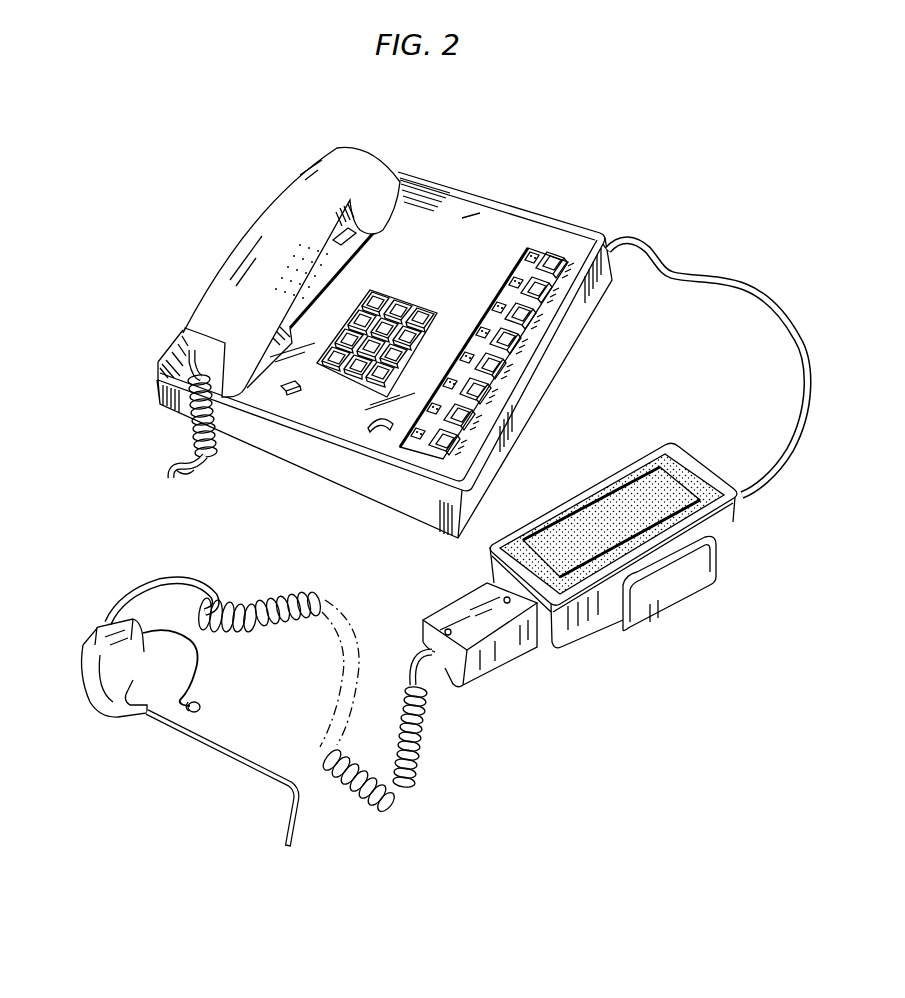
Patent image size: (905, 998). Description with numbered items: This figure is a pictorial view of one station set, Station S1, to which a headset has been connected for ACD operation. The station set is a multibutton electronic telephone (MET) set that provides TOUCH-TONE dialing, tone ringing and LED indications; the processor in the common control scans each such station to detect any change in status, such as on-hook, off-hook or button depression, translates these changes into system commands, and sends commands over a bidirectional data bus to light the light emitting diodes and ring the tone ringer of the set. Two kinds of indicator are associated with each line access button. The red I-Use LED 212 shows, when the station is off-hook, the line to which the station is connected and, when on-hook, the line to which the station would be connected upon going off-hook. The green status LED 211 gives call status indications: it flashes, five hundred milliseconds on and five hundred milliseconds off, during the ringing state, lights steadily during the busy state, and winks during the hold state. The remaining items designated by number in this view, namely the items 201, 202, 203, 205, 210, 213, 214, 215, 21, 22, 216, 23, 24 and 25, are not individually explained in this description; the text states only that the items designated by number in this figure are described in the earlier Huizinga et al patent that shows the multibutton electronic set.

The telephone base housing 201 is at (606, 320).
The handset 202 is at (358, 150).
The handset cord 203 is at (207, 468).
The housing top surface 205 is at (475, 217).
The function keys 210 is at (494, 353).
The green status LED 211 is at (510, 294).
The red I-Use LED 212 is at (537, 250).
The dial keypad 213 is at (437, 316).
The key strip 214 is at (536, 235).
The connecting cord 215 is at (800, 360).
The station S1 is at (608, 249).
The headset holder 21 is at (726, 528).
The adapter unit 22 is at (494, 662).
The coiled headset cord 216 is at (424, 770).
The headset earpiece body 23 is at (92, 703).
The ear plug 24 is at (195, 703).
The microphone boom 25 is at (294, 835).